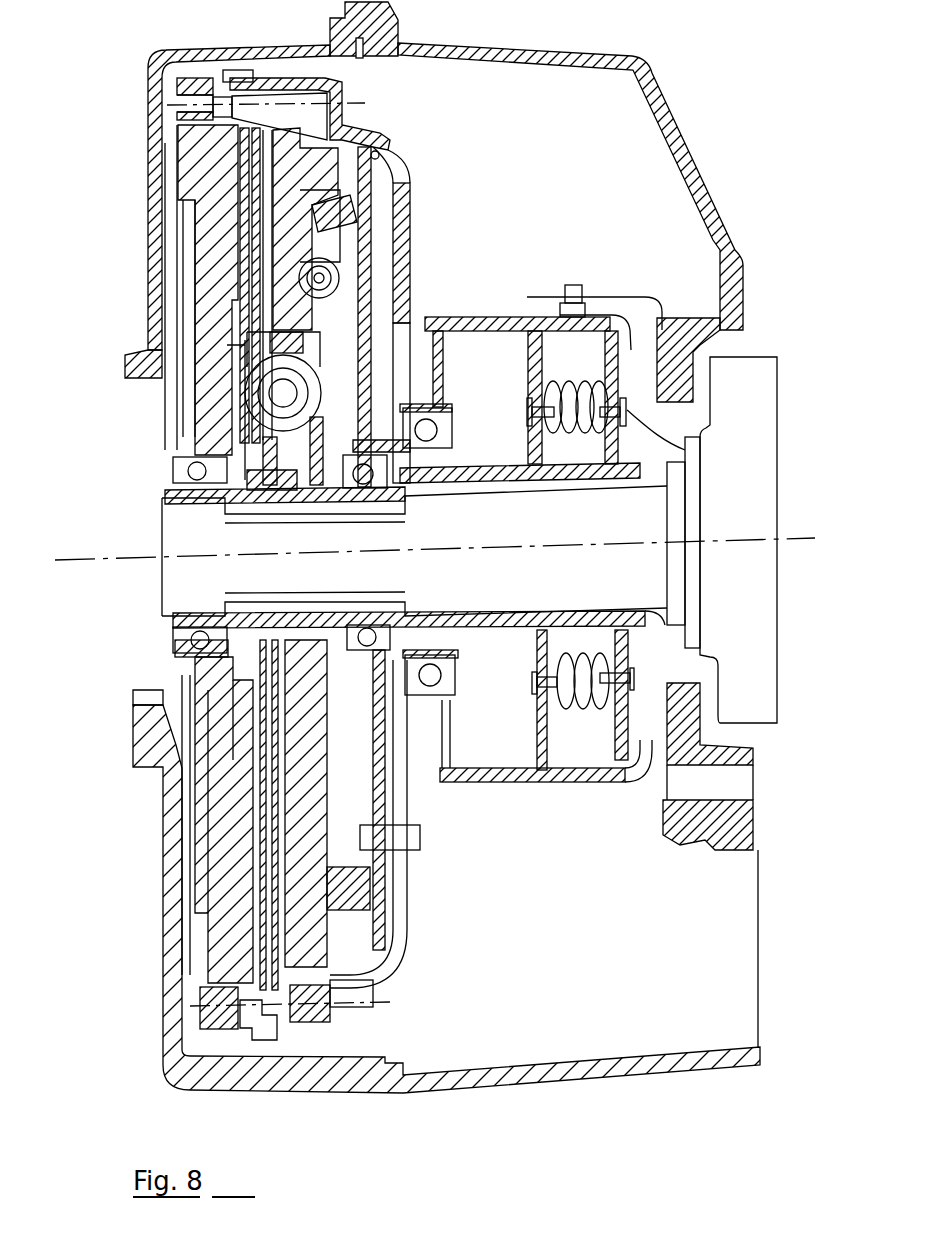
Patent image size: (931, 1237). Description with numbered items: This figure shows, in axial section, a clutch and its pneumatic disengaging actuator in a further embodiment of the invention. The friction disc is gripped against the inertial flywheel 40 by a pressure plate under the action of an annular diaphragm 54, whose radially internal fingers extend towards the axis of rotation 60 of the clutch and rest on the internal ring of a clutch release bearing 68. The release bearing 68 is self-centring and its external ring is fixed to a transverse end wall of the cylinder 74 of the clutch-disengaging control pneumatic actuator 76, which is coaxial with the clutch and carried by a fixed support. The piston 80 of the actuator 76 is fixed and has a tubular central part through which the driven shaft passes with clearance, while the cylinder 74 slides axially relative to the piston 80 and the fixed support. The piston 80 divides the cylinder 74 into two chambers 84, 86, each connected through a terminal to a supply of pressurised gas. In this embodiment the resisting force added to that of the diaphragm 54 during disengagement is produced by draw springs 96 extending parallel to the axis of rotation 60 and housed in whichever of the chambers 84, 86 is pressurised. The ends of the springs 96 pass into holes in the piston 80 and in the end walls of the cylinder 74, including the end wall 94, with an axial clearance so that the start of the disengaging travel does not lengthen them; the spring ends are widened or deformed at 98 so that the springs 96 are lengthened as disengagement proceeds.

The inertial flywheel 40 is at (208, 230).
The annular diaphragm 54 is at (376, 386).
The axis of rotation 60 is at (85, 558).
The clutch release bearing 68 is at (433, 672).
The cylinder 74 is at (483, 768).
The clutch-disengaging control pneumatic actuator 76 is at (556, 790).
The piston 80 is at (518, 347).
The chamber 84 is at (517, 374).
The chamber 86 is at (567, 362).
The end wall 94 is at (633, 352).
The draw springs 96 is at (562, 437).
The widened or deformed spring ends 98 is at (525, 413).